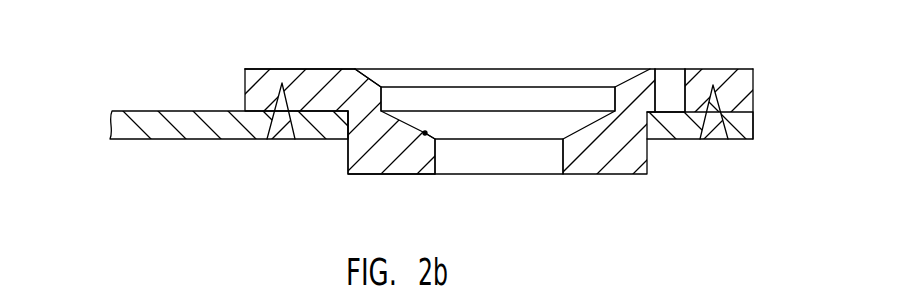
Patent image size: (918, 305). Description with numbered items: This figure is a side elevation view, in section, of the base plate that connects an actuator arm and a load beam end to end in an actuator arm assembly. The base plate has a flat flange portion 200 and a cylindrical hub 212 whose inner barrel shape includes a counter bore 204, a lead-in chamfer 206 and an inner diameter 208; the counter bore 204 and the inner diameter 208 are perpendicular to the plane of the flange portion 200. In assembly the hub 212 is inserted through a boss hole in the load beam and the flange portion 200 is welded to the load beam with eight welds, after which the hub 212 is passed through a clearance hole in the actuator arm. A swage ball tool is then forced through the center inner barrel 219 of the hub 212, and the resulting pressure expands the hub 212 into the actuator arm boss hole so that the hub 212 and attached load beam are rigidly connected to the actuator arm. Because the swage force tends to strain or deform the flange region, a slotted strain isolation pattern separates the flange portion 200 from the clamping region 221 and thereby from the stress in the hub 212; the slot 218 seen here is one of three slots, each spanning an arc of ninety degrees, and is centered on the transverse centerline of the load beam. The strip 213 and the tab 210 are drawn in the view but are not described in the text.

The flange portion 200 is at (245, 77).
The clamping region 221 is at (317, 71).
The counter bore 204 is at (383, 88).
The center inner barrel 219 is at (493, 96).
The second slot 218 is at (683, 88).
The strip layer 213 is at (167, 139).
The locating tab 210 is at (278, 142).
The hub 212 is at (372, 167).
The lead-in chamfer 206 is at (425, 133).
The inner diameter 208 is at (435, 162).